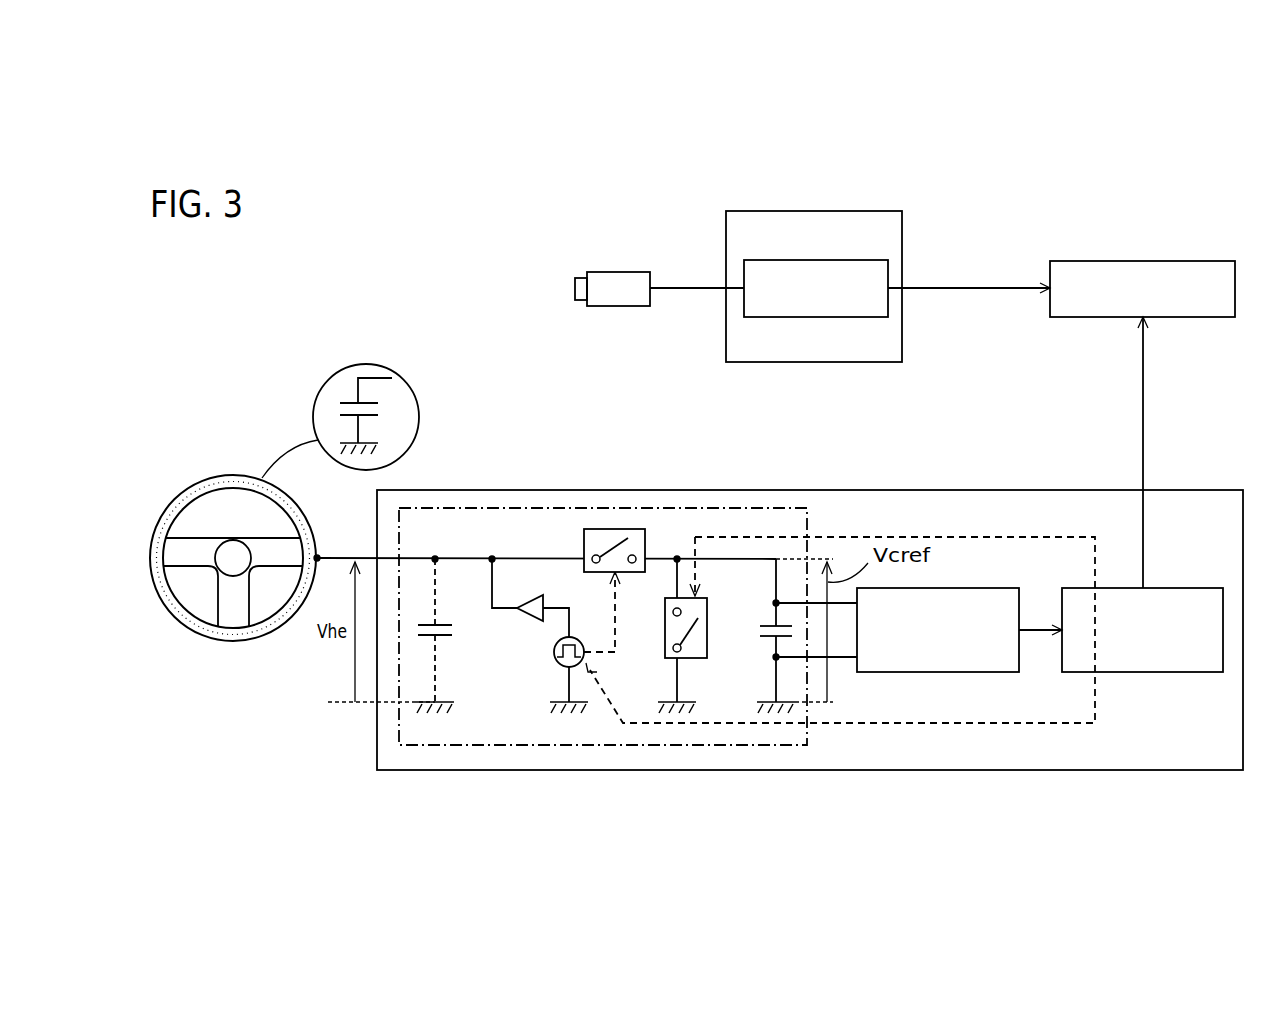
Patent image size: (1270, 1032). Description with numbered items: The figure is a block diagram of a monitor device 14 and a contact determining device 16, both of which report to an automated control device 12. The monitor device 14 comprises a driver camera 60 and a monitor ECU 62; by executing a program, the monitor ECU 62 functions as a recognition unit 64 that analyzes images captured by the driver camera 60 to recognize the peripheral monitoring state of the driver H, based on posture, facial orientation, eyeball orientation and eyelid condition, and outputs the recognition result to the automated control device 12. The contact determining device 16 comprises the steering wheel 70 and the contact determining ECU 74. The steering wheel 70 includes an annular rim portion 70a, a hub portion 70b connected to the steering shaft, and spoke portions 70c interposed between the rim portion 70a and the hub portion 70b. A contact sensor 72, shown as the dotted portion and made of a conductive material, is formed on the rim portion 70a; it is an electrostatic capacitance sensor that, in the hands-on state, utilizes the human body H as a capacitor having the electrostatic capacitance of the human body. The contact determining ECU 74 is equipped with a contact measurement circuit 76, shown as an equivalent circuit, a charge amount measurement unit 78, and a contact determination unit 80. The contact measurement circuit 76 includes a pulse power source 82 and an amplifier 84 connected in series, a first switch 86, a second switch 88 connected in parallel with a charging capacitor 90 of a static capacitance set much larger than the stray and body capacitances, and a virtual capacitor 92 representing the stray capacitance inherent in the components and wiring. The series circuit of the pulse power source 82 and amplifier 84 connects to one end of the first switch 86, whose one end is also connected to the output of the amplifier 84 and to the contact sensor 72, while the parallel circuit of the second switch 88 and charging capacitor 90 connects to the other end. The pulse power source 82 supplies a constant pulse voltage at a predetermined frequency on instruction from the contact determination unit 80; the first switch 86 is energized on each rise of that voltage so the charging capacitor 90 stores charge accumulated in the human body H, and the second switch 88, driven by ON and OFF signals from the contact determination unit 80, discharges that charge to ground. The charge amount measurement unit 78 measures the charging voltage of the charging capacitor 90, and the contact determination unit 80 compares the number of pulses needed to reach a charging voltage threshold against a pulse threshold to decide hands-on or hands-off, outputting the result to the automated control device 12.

The automated control device 12 is at (1135, 261).
The monitor device 14 is at (700, 217).
The contact determining device 16 is at (735, 477).
The driver camera 60 is at (604, 272).
The monitor ECU 62 is at (902, 233).
The recognition unit 64 is at (772, 318).
The steering wheel 70 is at (213, 468).
The rim portion 70a is at (165, 607).
The hub portion 70b is at (233, 556).
The spoke portions 70c is at (178, 547).
The contact sensor 72 is at (151, 558).
The contact determining ECU 74 is at (916, 489).
The contact measurement circuit 76 is at (466, 508).
The charge amount measurement unit 78 is at (898, 673).
The contact determination unit 80 is at (1145, 673).
The pulse power source 82 is at (555, 661).
The amplifier 84 is at (532, 594).
The first switch 86 is at (584, 536).
The second switch 88 is at (663, 622).
The charging capacitor 90 is at (758, 628).
The virtual capacitor 92 is at (443, 638).
The driver H is at (420, 390).